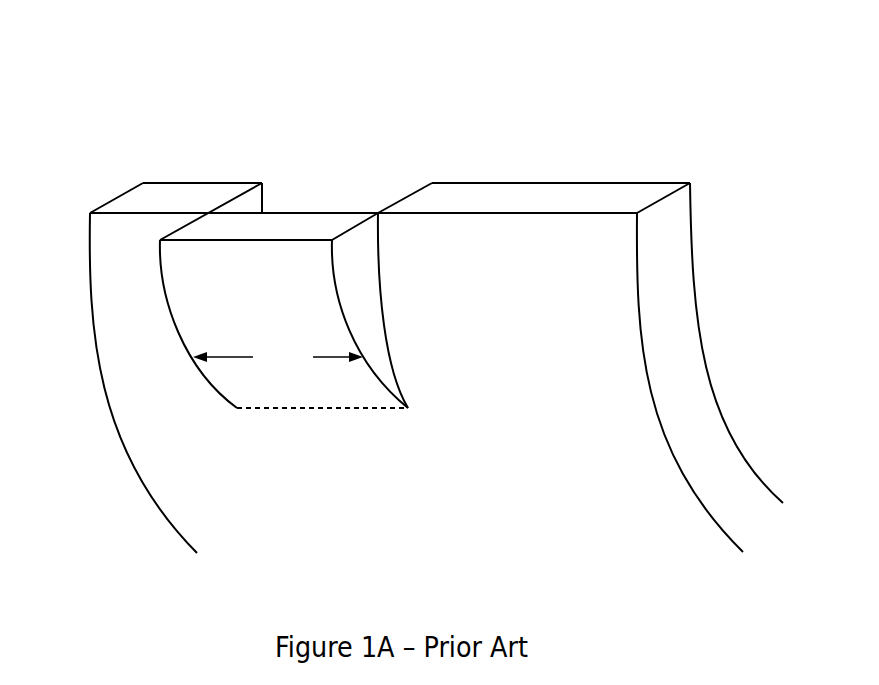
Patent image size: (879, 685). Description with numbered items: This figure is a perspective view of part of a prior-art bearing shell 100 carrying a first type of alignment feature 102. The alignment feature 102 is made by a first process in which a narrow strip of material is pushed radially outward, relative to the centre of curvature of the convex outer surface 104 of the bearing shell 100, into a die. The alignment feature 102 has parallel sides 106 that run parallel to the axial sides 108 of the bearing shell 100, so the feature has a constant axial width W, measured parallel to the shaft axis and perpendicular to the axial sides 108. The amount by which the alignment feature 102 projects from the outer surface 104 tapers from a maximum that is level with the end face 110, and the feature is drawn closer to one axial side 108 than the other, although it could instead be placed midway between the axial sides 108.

The bearing shell 100 is at (130, 100).
The alignment feature 102 is at (275, 298).
The outer surface 104 is at (528, 348).
The parallel sides 106 is at (358, 285).
The axial sides 108 is at (105, 412).
The end face 110 is at (503, 198).